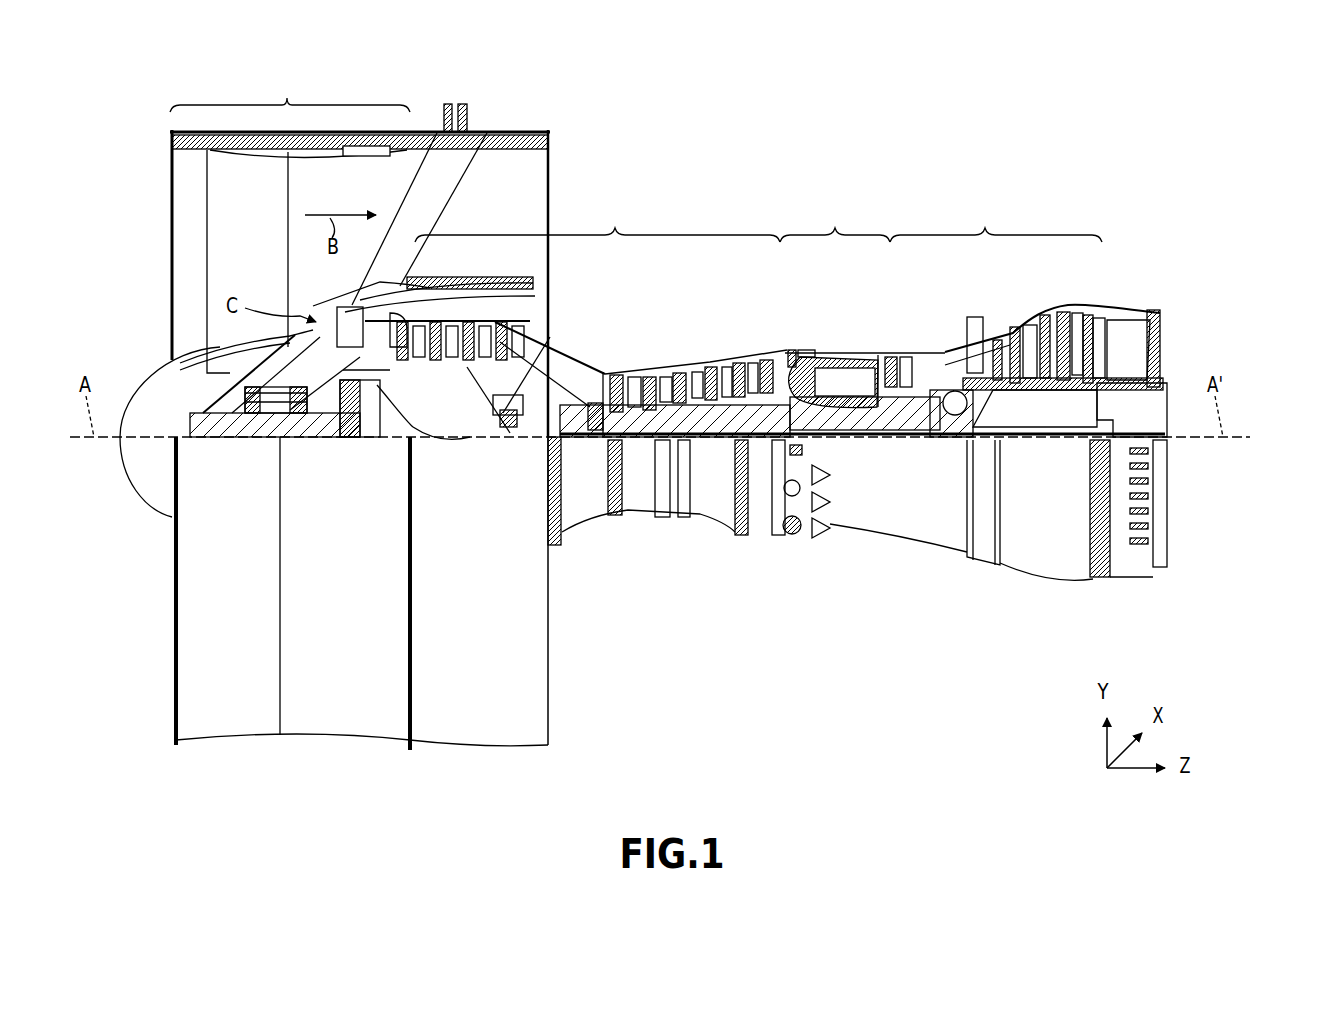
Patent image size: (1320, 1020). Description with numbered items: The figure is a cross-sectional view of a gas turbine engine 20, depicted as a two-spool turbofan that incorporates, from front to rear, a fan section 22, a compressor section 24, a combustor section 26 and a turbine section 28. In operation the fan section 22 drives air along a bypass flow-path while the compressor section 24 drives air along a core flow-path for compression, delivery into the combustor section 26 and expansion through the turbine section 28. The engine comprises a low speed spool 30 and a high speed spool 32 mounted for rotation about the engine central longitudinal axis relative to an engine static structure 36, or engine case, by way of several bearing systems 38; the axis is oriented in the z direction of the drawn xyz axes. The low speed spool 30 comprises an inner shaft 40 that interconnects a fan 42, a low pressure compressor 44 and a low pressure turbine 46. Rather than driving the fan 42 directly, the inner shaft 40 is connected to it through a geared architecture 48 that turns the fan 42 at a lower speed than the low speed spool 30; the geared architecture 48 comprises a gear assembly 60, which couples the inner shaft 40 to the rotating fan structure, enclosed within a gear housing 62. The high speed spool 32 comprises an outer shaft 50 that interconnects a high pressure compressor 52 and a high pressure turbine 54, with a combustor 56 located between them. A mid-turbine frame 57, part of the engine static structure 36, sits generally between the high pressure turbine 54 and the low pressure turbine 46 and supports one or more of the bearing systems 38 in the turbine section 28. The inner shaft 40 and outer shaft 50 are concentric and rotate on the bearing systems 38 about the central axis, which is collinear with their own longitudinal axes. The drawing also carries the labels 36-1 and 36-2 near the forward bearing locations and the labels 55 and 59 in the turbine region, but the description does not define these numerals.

The gas turbine engine 20 is at (886, 160).
The fan section 22 is at (318, 221).
The compressor section 24 is at (601, 306).
The combustor section 26 is at (862, 276).
The turbine section 28 is at (996, 221).
The low speed spool 30 is at (719, 456).
The high speed spool 32 is at (757, 403).
The engine static structure 36 is at (348, 712).
The first bearing 36-1 is at (254, 437).
The second bearing 36-2 is at (512, 440).
The bearing system 38 is at (945, 437).
The inner shaft 40 is at (575, 445).
The fan 42 is at (256, 256).
The low pressure compressor 44 is at (548, 320).
The low pressure turbine 46 is at (1037, 310).
The geared architecture 48 is at (375, 458).
The outer shaft 50 is at (822, 437).
The high pressure compressor 52 is at (697, 403).
The high pressure turbine 54 is at (905, 355).
The combustor casing 55 is at (915, 397).
The combustor 56 is at (830, 380).
The mid-turbine frame 57 is at (952, 368).
The turbine blade 59 is at (963, 337).
The gear assembly 60 is at (405, 425).
The gear housing 62 is at (380, 395).